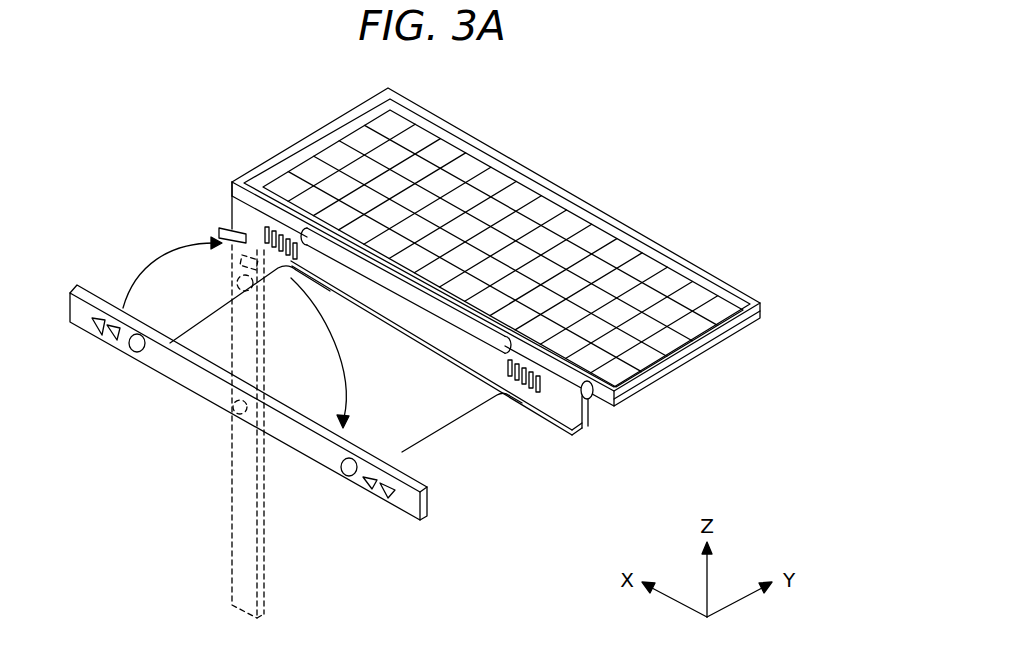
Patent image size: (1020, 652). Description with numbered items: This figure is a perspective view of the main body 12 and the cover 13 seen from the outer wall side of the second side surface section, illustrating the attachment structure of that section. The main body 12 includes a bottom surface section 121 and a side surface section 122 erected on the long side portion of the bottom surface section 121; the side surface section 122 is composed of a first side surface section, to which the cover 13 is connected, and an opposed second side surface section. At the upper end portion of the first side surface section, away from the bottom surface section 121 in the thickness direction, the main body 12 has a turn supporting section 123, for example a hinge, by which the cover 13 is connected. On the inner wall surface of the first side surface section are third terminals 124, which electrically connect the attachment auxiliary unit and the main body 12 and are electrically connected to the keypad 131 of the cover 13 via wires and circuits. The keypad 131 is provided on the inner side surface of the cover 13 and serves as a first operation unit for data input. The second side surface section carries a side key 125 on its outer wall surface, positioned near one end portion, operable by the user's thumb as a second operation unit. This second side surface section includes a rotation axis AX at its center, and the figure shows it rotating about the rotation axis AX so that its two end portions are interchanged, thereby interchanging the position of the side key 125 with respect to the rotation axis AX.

The main body 12 is at (140, 228).
The cover 13 is at (496, 247).
The keypad 131 is at (647, 266).
The bottom surface section 121 is at (480, 398).
The side surface section 122 is at (190, 380).
The turn supporting section 123 is at (243, 188).
The third terminals 124 is at (556, 462).
The side key 125 is at (357, 494).
The rotation axis AX is at (243, 415).